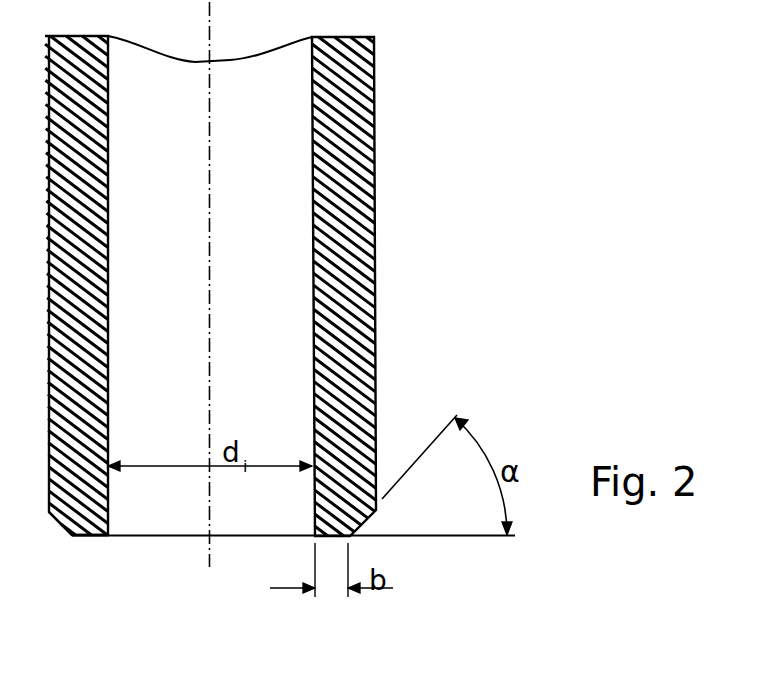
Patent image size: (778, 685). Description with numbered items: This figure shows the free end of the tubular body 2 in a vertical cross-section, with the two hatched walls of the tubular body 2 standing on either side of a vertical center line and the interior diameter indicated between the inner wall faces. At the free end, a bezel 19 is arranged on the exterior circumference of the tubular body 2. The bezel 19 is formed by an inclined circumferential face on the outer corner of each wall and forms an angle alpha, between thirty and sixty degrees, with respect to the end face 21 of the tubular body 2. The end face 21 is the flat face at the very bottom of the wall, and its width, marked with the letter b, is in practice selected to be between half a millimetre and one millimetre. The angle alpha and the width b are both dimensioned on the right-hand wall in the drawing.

The tubular body 2 is at (263, 281).
The bezel 19 is at (56, 518).
The end face 21 is at (88, 537).